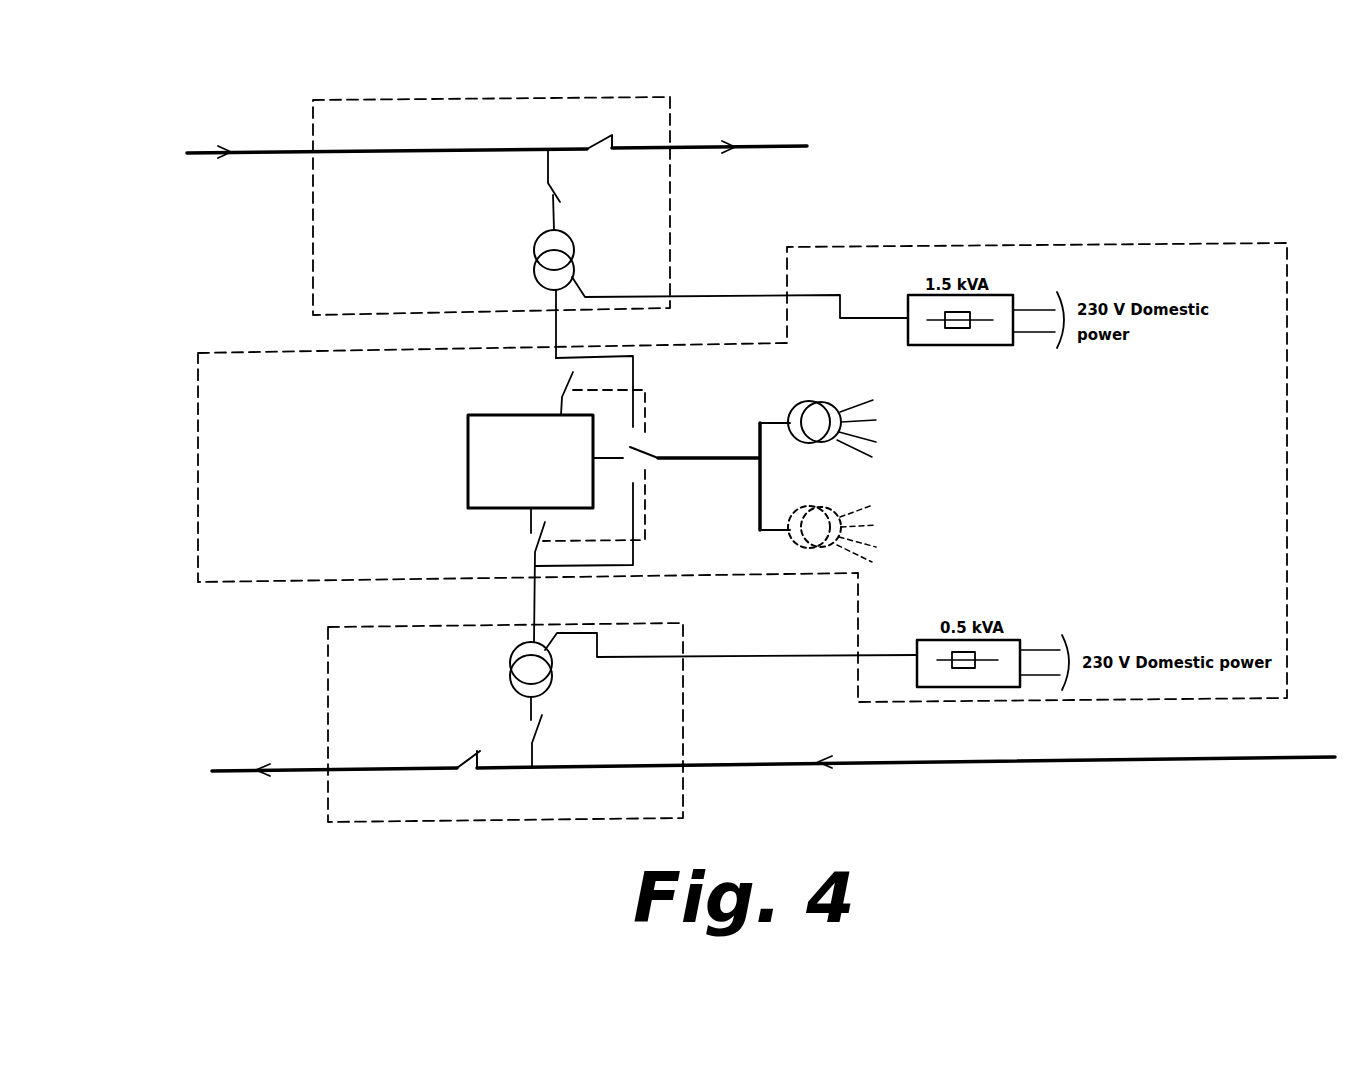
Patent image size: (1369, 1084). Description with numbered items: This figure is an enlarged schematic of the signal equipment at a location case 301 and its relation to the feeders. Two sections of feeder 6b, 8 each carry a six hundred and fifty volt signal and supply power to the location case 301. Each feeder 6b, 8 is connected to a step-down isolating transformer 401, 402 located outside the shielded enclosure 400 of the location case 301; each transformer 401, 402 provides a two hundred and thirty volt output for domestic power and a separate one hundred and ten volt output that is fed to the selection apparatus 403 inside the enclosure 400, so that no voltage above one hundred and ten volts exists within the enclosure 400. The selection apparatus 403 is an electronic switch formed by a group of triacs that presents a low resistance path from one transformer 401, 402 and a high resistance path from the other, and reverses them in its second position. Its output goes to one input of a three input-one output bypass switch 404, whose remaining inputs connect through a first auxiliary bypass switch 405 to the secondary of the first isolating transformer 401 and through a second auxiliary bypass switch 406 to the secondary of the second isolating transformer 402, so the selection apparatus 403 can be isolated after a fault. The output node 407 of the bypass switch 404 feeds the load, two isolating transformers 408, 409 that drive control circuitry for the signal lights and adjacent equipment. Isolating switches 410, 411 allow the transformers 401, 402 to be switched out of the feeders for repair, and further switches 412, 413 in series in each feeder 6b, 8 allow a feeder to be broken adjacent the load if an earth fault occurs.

The feeder 6b is at (200, 157).
The feeder 8 is at (913, 766).
The location case 301 is at (150, 494).
The shielded enclosure 400 is at (198, 533).
The first isolating transformer 401 is at (512, 670).
The second isolating transformer 402 is at (533, 258).
The selection apparatus 403 is at (551, 474).
The bypass switch 404 is at (660, 456).
The first auxiliary bypass switch 405 is at (533, 545).
The second auxiliary bypass switch 406 is at (558, 370).
The output node 407 is at (725, 462).
The isolating transformer 408 is at (810, 402).
The isolating transformer 409 is at (795, 537).
The isolating switch 410 is at (557, 187).
The isolating switch 411 is at (537, 730).
The switch 412 is at (467, 760).
The switch 413 is at (600, 140).